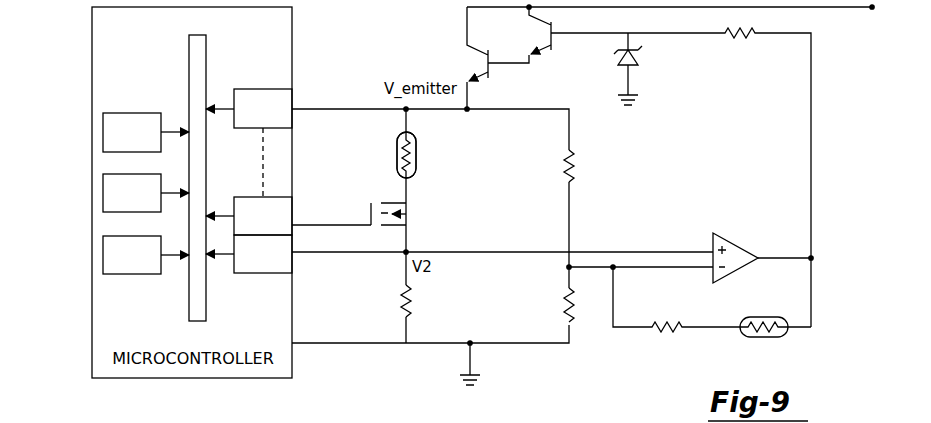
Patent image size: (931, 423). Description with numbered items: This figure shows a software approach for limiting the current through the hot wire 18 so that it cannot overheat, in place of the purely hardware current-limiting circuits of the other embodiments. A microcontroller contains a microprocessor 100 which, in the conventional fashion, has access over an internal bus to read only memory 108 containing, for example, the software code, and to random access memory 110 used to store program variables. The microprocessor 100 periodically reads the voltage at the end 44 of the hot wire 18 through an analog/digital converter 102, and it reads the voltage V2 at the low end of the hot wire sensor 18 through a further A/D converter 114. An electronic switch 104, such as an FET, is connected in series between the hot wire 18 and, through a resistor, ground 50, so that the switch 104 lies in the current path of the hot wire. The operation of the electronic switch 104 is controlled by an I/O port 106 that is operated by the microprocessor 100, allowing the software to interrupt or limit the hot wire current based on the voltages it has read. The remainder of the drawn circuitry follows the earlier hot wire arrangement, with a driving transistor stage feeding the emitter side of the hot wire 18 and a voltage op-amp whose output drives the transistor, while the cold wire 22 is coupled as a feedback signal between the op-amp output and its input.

The random access memory 110 is at (103, 132).
The microprocessor 100 is at (103, 191).
The read only memory 108 is at (103, 254).
The analog/digital converter 102 is at (264, 89).
The I/O port 106 is at (292, 214).
The further A/D converter 114 is at (270, 273).
The end of the hot wire 44 is at (412, 130).
The hot wire 18 is at (397, 155).
The electronic switch 104 is at (406, 220).
The ground 50 is at (468, 389).
The cold wire 22 is at (750, 338).